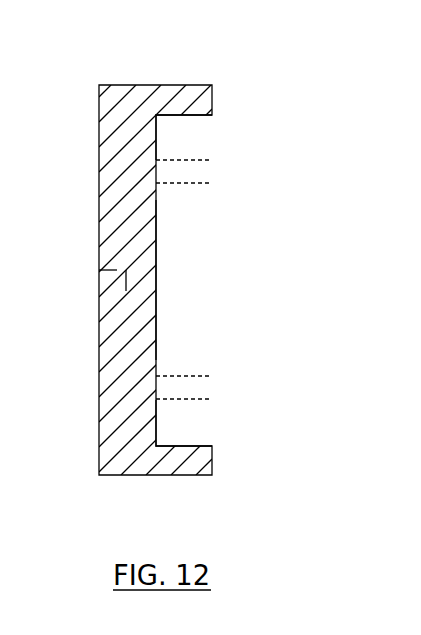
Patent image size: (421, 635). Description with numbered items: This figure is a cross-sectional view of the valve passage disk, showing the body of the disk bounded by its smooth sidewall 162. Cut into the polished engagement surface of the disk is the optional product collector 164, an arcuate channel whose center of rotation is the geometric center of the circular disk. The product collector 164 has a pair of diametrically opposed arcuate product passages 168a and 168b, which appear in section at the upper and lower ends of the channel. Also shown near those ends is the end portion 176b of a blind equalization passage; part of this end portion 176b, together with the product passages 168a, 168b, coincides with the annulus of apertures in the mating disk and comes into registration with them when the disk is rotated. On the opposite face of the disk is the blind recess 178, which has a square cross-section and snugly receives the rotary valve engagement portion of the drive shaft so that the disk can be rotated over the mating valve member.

The sidewall 162 is at (155, 86).
The product collector 164 is at (183, 272).
The arcuate product passage 168a is at (182, 138).
The arcuate product passage 168b is at (185, 429).
The end portion 176b is at (182, 172).
The blind recess 178 is at (108, 290).